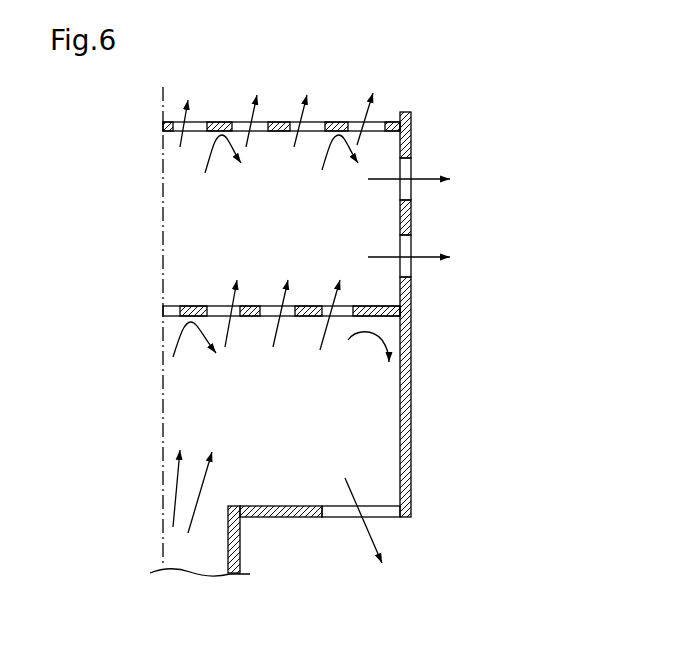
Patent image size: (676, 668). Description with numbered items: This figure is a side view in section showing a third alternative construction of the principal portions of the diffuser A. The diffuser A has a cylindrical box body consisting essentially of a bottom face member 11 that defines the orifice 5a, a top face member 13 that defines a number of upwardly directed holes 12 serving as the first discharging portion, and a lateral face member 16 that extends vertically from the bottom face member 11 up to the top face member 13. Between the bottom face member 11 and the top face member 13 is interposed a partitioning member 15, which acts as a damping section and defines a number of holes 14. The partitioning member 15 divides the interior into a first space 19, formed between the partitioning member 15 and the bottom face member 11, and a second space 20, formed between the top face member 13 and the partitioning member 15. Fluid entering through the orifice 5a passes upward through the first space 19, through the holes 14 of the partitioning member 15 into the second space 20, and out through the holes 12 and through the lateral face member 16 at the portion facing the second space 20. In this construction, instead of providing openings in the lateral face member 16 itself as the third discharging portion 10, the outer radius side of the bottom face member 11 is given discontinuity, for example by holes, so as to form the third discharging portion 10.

The diffuser A is at (461, 126).
The upwardly directed holes 12 is at (202, 120).
The top face member 13 is at (283, 120).
The second space 20 is at (315, 175).
The holes 14 is at (212, 304).
The partitioning member 15 is at (255, 304).
The first space 19 is at (281, 406).
The lateral face member 16 is at (412, 373).
The orifice 5a is at (226, 520).
The bottom face member 11 is at (267, 518).
The third discharging portion 10 is at (387, 513).